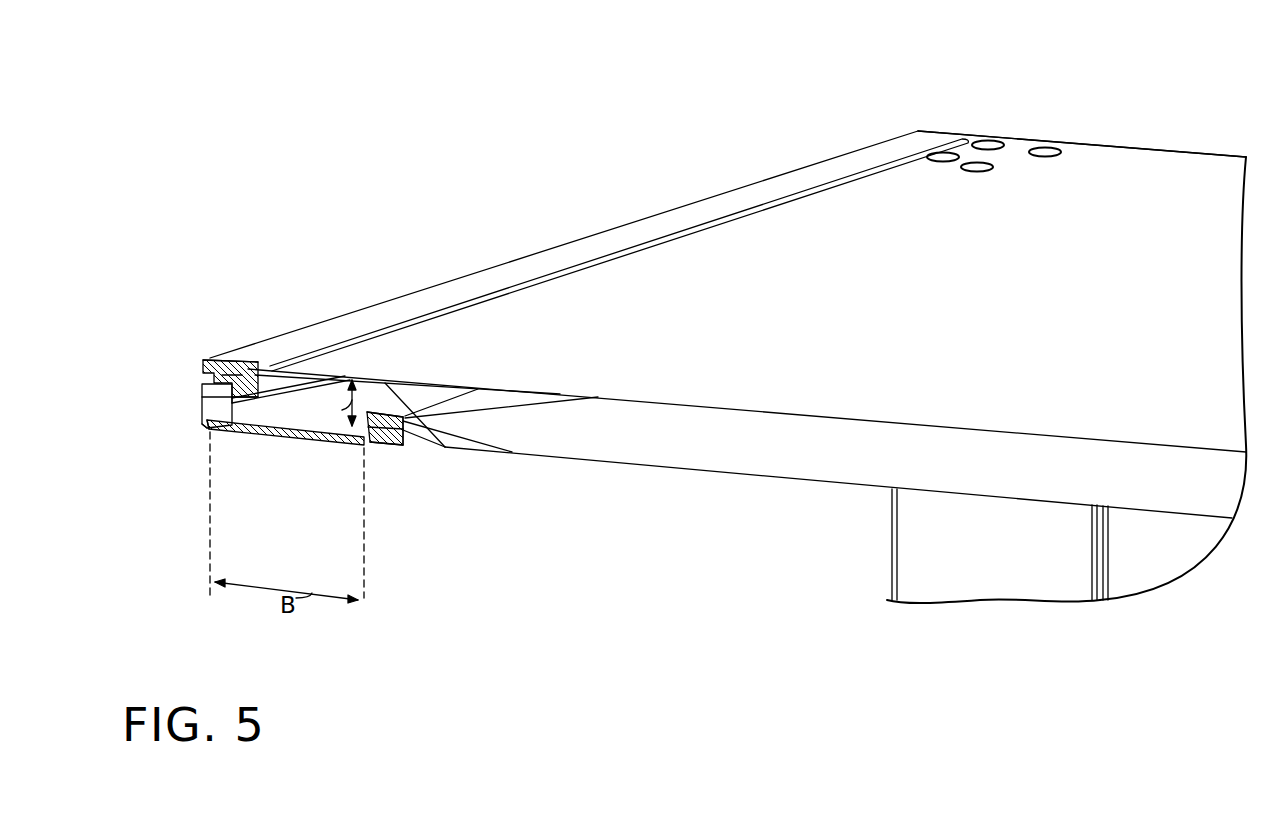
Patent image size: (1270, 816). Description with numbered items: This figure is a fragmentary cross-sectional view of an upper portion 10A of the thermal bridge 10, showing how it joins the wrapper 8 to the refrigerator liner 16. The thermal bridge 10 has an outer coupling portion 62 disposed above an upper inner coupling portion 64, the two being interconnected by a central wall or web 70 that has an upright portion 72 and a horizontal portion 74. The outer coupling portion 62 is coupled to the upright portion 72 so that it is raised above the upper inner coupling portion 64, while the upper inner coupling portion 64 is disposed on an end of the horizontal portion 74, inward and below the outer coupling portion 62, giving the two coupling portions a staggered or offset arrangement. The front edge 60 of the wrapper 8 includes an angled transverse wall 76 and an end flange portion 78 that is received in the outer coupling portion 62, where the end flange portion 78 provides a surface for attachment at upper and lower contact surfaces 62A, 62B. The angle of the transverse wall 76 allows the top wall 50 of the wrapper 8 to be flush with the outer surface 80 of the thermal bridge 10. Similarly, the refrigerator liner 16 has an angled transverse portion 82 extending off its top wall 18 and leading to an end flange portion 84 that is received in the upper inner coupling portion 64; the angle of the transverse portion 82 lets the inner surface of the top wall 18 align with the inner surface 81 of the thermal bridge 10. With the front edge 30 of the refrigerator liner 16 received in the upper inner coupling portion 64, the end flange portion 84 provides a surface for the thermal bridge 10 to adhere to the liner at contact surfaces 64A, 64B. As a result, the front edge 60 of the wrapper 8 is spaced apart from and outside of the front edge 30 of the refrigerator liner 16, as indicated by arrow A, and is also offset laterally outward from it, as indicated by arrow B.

The wrapper 8 is at (1110, 118).
The upper portion of the thermal bridge 10A is at (632, 195).
The outer surface of the thermal bridge 80 is at (538, 262).
The thermal bridge 10 is at (232, 270).
The outer coupling portion 62 is at (380, 304).
The end flange portion 84 is at (405, 412).
The top wall 50 is at (367, 352).
The upper contact surface 62A is at (237, 355).
The front edge 60 is at (215, 377).
The upright portion 72 is at (203, 400).
The lower contact surface 62B is at (205, 405).
The central wall or web 70 is at (205, 437).
The end flange portion 78 is at (210, 433).
The angled transverse wall 76 is at (282, 430).
The horizontal portion 74 is at (306, 440).
The front edge 30 is at (358, 443).
The upper inner coupling portion 64 is at (380, 452).
The inner surface of the thermal bridge 81 is at (398, 446).
The contact surface 64B is at (405, 444).
The contact surface 64A is at (405, 420).
The angled transverse portion 82 is at (520, 402).
The top wall 18 is at (750, 476).
The refrigerator liner 16 is at (845, 507).